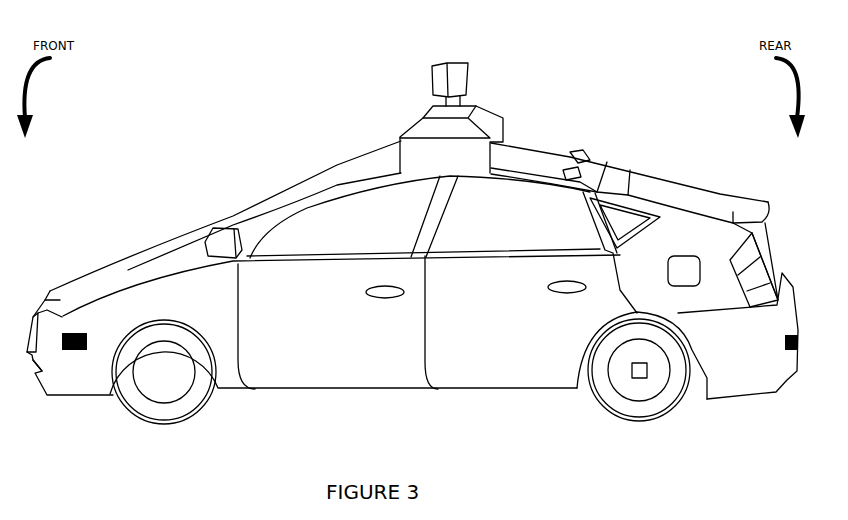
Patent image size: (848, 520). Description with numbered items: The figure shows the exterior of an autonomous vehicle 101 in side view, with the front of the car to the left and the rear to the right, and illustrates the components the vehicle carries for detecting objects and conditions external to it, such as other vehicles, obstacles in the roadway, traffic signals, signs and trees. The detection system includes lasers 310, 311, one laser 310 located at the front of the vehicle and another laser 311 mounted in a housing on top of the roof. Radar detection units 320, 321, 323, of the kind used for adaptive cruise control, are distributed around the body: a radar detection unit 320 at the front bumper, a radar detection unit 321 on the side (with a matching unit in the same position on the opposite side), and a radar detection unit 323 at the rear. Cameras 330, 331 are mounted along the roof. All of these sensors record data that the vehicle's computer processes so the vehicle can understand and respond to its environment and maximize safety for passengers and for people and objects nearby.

The vehicle 101 is at (203, 30).
The laser 310 is at (28, 322).
The laser 311 is at (435, 72).
The radar detection unit 320 is at (32, 322).
The radar detection unit 321 is at (77, 352).
The radar detection unit 323 is at (794, 350).
The camera 330 is at (490, 172).
The camera 331 is at (333, 178).